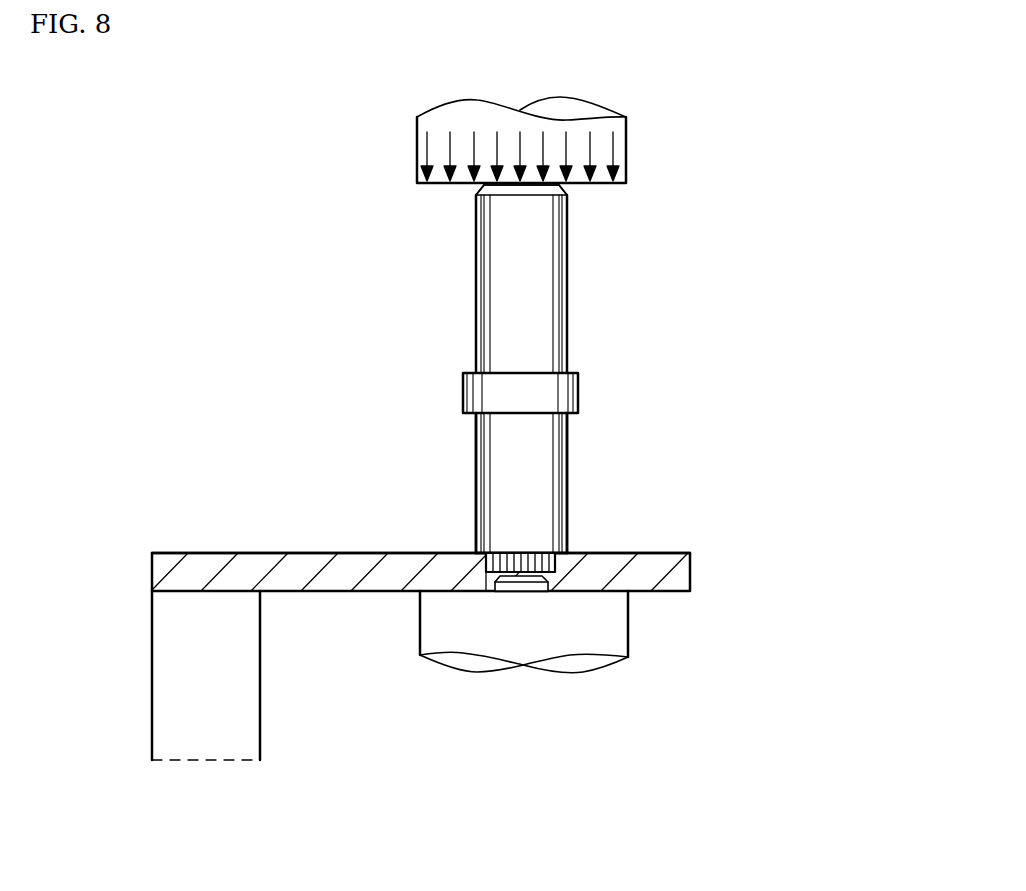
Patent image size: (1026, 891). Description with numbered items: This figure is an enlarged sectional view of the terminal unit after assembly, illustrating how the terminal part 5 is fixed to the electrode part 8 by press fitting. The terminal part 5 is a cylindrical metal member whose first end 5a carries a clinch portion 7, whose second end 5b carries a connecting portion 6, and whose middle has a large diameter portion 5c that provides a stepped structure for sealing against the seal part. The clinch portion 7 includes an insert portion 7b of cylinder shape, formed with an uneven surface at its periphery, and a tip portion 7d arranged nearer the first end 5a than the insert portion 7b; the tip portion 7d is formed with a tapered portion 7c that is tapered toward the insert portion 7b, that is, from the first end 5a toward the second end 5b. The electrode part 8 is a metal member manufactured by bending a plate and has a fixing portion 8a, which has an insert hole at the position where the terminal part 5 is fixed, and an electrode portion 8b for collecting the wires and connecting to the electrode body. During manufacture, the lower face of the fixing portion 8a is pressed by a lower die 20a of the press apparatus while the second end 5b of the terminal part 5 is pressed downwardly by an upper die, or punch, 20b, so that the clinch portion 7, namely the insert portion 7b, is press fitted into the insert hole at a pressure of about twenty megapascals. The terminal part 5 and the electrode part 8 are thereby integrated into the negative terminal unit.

The terminal part 5 is at (595, 305).
The first end 5a is at (445, 503).
The second end 5b is at (428, 215).
The large diameter portion 5c is at (447, 395).
The connecting portion 6 is at (460, 282).
The clinch portion 7 is at (465, 565).
The insert portion 7b is at (562, 563).
The tapered portion 7c is at (566, 583).
The tip portion 7d is at (490, 583).
The electrode part 8 is at (202, 535).
The fixing portion 8a is at (675, 572).
The electrode portion 8b is at (235, 723).
The lower die 20a is at (628, 622).
The upper die (punch) 20b is at (626, 147).